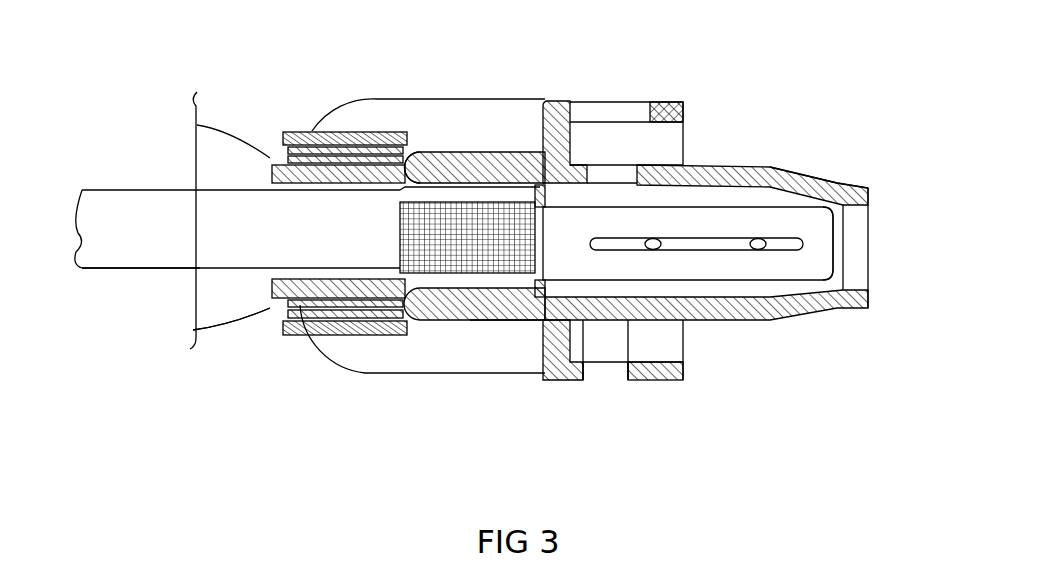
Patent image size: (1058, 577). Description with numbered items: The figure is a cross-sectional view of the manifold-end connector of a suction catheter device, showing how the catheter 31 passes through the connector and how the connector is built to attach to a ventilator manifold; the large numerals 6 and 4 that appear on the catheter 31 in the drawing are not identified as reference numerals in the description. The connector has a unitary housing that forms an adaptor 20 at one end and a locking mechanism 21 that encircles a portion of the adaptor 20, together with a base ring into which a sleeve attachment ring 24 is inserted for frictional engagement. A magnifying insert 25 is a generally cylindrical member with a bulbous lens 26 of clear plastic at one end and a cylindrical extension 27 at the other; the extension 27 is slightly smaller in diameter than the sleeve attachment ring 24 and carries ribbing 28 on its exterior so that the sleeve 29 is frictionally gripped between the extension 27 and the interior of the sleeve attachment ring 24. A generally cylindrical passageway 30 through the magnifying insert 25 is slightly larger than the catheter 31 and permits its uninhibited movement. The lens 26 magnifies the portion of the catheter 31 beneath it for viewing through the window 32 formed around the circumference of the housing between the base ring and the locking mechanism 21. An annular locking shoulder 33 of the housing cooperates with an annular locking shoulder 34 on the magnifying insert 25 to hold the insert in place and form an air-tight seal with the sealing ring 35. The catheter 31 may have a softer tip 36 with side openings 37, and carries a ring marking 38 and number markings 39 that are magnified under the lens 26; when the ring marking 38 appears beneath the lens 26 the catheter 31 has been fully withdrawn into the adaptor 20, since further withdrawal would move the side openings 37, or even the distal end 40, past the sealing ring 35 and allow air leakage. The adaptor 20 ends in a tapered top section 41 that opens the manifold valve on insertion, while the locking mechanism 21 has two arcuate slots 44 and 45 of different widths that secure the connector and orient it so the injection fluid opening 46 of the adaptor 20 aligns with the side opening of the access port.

The conductor 4 is at (421, 228).
The cable 6 is at (237, 229).
The adaptor 20 is at (757, 357).
The locking mechanism 21 is at (651, 398).
The sleeve attachment ring 24 is at (303, 132).
The magnifying insert 25 is at (414, 155).
The bulbous lens 26 is at (490, 172).
The cylindrical extension 27 is at (350, 336).
The ribbing 28 is at (298, 322).
The sleeve 29 is at (238, 312).
The passageway 30 is at (428, 325).
The catheter 31 is at (170, 266).
The window 32 is at (483, 333).
The annular locking shoulder 33 is at (545, 101).
The annular locking shoulder 34 is at (515, 296).
The sealing ring 35 is at (627, 112).
The tip 36 is at (675, 290).
The side openings 37 is at (653, 240).
The ring marking 38 is at (452, 212).
The number markings 39 is at (170, 222).
The distal end 40 is at (823, 280).
The tapered top section 41 is at (835, 178).
The arcuate slot 44 is at (598, 390).
The arcuate slot 45 is at (568, 163).
The injection fluid opening 46 is at (614, 168).